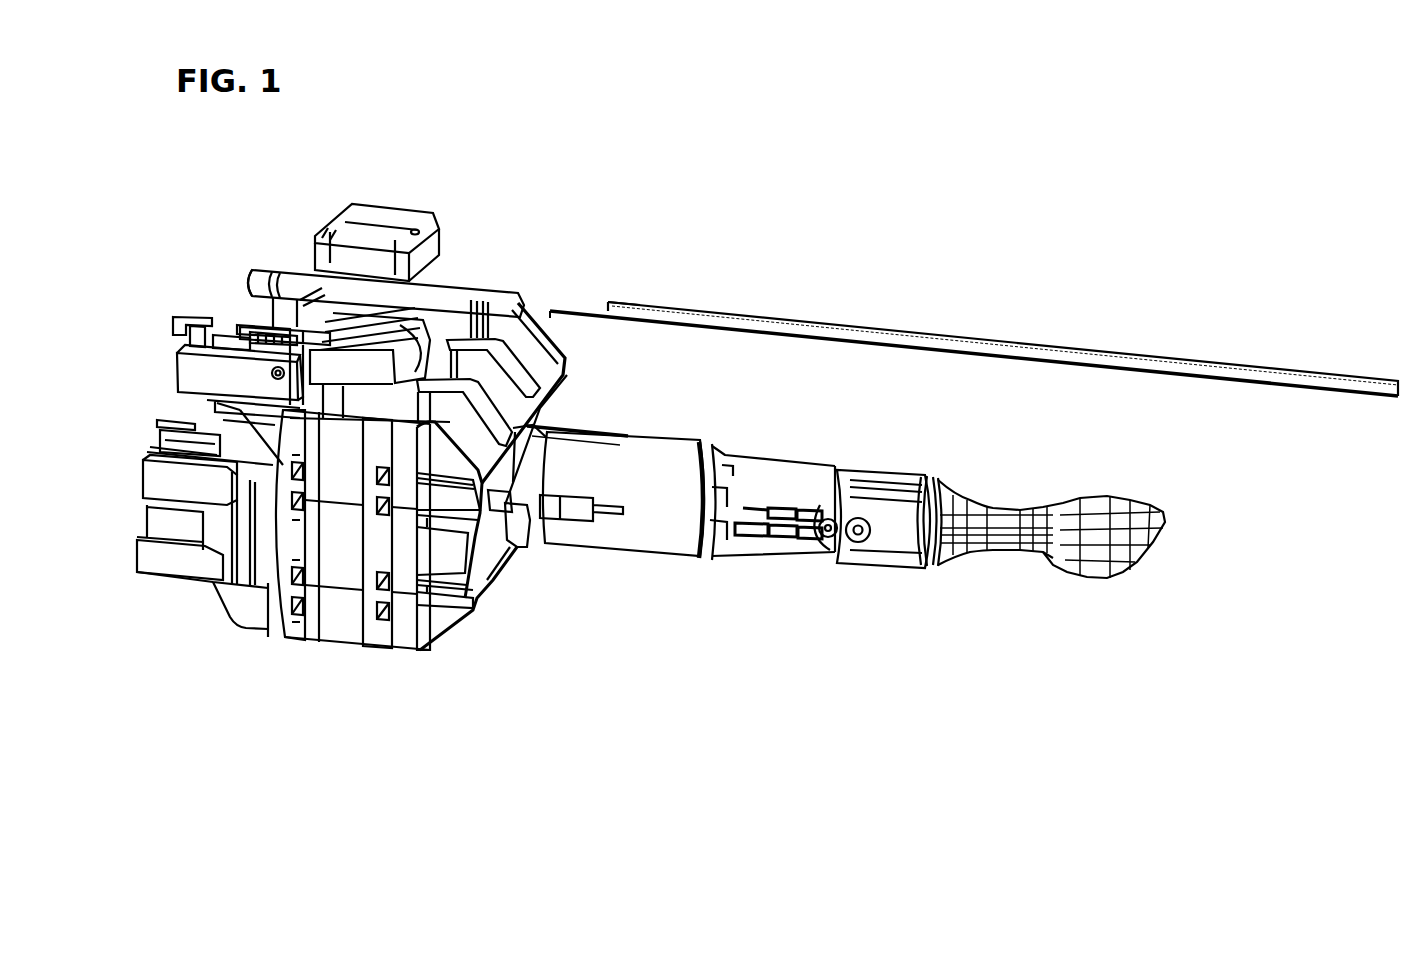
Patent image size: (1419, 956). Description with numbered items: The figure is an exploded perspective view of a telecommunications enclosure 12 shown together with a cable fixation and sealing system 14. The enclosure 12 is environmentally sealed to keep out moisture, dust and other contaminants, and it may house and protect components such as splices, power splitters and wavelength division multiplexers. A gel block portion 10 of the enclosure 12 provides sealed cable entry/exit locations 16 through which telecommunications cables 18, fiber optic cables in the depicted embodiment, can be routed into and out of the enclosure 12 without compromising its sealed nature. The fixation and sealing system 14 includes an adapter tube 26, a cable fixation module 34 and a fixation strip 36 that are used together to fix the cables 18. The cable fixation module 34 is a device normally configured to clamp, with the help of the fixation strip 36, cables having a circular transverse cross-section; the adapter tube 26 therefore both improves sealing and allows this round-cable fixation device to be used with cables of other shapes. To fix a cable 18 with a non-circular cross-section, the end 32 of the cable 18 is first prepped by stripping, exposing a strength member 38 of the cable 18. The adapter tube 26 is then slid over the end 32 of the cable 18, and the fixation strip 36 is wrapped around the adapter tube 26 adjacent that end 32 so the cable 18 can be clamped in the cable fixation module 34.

The gel block portion 10 is at (448, 213).
The telecommunications enclosure 12 is at (472, 625).
The cable fixation and sealing system 14 is at (535, 283).
The sealed cable entry/exit locations 16 is at (407, 350).
The telecommunications cable 18 is at (898, 331).
The adapter tube 26 is at (483, 300).
The end of the cable 32 is at (602, 300).
The cable fixation module 34 is at (200, 373).
The fixation strip 36 is at (290, 278).
The strength member 38 is at (584, 315).